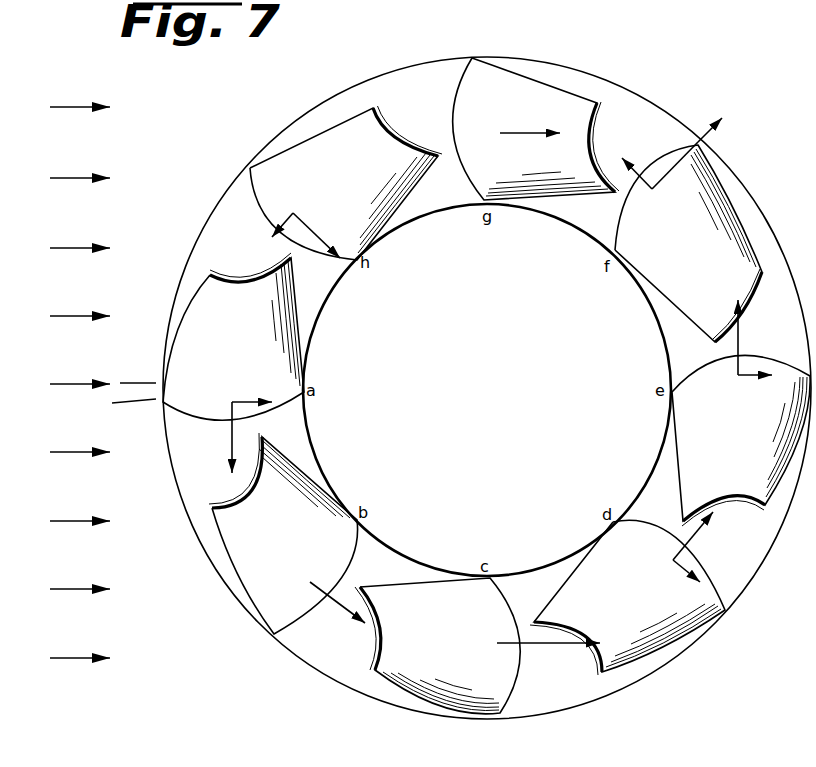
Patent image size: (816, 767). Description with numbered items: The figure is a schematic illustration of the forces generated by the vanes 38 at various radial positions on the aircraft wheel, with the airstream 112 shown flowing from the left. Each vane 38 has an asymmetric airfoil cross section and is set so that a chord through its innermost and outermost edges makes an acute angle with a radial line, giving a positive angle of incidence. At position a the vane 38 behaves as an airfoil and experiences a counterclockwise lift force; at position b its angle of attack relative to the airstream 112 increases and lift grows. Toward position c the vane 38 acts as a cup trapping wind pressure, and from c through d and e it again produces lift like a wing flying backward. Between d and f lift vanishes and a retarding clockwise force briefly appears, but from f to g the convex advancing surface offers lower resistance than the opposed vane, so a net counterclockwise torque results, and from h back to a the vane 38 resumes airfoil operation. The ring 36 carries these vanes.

The vane 38 is at (546, 96).
The airstream 112 is at (75, 248).
The wheel rim ring 36 is at (487, 388).